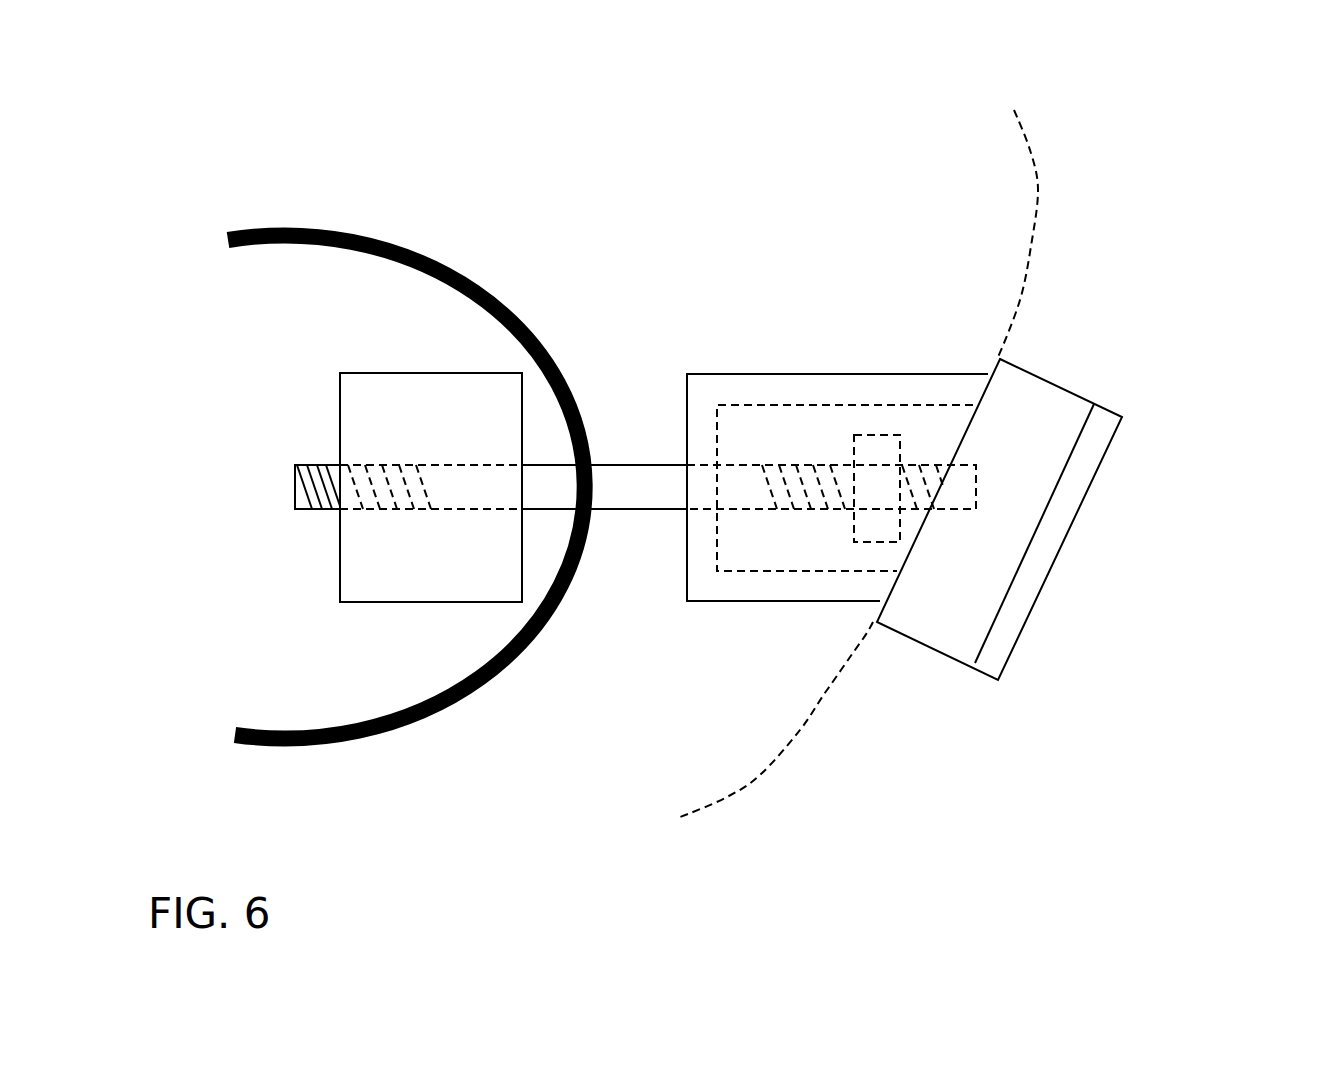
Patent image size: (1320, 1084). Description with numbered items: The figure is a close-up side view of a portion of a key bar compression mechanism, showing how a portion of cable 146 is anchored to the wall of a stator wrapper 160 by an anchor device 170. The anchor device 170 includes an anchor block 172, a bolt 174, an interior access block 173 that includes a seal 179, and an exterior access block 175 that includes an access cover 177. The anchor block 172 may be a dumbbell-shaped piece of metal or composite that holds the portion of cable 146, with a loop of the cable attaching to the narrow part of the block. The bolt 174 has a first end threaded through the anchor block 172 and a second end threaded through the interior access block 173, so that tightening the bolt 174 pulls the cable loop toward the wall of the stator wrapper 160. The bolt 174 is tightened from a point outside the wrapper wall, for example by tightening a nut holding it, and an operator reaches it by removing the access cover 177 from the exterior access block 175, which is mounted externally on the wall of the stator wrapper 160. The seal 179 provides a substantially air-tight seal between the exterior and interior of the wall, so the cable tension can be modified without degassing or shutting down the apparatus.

The portion of cable 146 is at (360, 757).
The stator wrapper 160 is at (770, 803).
The anchor device 170 is at (410, 127).
The anchor block 172 is at (442, 402).
The interior access block 173 is at (885, 390).
The bolt 174 is at (628, 500).
The exterior access block 175 is at (1055, 410).
The access cover 177 is at (1037, 555).
The seal 179 is at (702, 389).